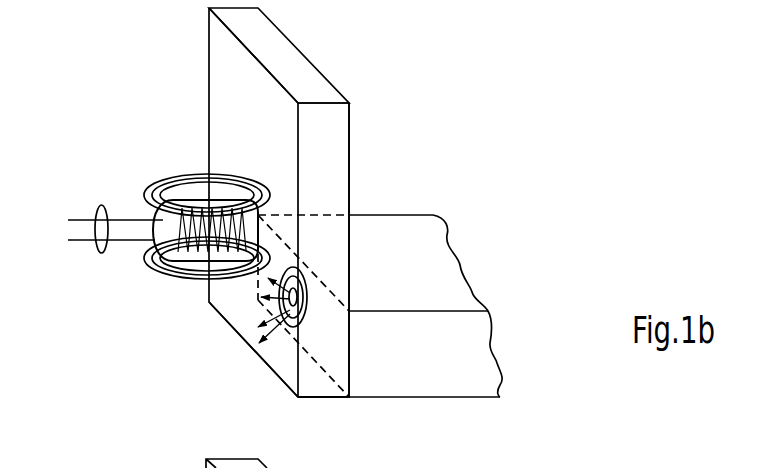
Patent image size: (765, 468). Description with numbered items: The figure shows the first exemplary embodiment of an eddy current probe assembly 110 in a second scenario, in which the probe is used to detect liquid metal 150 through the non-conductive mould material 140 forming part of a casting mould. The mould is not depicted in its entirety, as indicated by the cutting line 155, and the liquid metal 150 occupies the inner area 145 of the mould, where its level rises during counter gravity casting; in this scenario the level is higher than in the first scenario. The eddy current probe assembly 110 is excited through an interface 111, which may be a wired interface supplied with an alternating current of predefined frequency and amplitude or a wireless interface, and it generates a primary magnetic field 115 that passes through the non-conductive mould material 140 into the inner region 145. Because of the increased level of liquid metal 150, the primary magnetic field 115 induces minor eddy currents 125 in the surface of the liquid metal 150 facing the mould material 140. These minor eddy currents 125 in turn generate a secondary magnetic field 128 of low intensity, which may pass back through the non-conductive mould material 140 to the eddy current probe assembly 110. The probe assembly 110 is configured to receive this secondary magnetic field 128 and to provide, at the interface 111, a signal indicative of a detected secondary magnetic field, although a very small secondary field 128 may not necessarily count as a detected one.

The eddy current probe assembly 110 is at (132, 187).
The interface 111 is at (97, 253).
The primary magnetic field 115 is at (180, 176).
The eddy currents 125 is at (293, 308).
The secondary magnetic field 128 is at (228, 322).
The non-conductive mould material 140 is at (220, 58).
The inner area of the casting mould 145 is at (381, 182).
The liquid metal 150 is at (423, 383).
The cutting line 155 is at (500, 375).